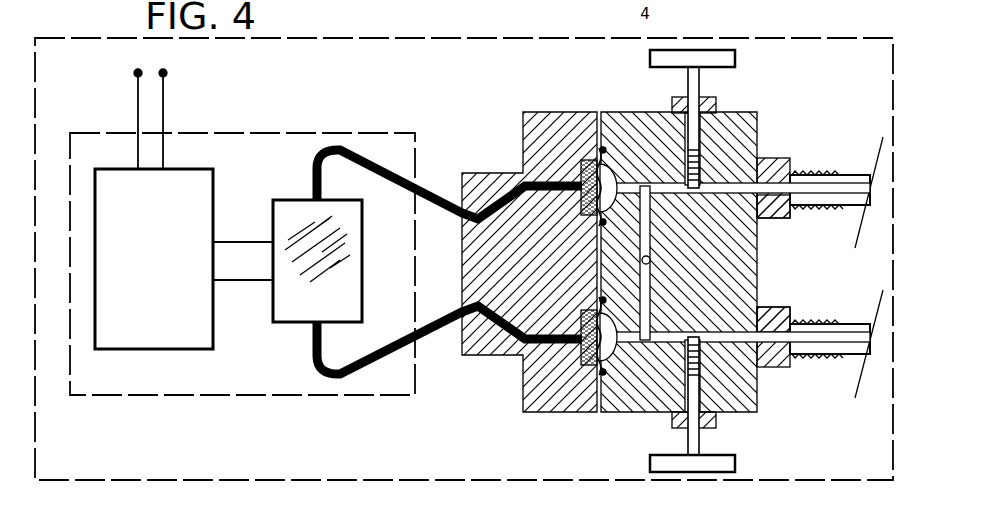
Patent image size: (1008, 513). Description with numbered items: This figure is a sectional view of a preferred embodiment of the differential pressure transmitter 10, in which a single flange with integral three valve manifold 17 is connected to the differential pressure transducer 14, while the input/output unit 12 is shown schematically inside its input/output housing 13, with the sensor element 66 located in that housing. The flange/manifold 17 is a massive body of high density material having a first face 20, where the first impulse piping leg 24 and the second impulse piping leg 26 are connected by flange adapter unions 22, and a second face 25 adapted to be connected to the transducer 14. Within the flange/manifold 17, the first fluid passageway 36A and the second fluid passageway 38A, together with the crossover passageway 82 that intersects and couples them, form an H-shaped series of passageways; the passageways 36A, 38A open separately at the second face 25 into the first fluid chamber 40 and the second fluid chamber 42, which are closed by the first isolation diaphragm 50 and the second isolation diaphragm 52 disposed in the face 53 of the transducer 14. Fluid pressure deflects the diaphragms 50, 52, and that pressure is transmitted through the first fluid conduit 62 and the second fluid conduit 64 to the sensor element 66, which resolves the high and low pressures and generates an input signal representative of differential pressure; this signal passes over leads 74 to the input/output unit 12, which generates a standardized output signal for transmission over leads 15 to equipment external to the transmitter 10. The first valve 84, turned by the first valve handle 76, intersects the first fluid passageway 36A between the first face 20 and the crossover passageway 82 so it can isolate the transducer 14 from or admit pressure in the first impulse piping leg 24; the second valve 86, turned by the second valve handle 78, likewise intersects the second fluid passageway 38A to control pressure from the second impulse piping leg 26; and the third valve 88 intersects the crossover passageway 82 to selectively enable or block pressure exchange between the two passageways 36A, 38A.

The differential pressure transmitter 10 is at (378, 44).
The input/output unit 12 is at (190, 213).
The input/output housing 13 is at (240, 133).
The differential pressure transducer 14 is at (572, 118).
The leads 15 is at (138, 70).
The single flange with integral three valve manifold 17 is at (623, 125).
The first face 20 is at (752, 125).
The flange adapter unions 22 is at (770, 307).
The first impulse piping leg 24 is at (810, 200).
The second face 25 is at (597, 268).
The second impulse piping leg 26 is at (830, 318).
The first fluid passageway 36A is at (768, 160).
The second fluid passageway 38A is at (760, 372).
The first fluid chamber 40 is at (618, 167).
The second fluid chamber 42 is at (590, 313).
The first isolation diaphragm 50 is at (622, 112).
The second isolation diaphragm 52 is at (597, 400).
The face 53 is at (597, 130).
The first fluid conduit 62 is at (520, 182).
The second fluid conduit 64 is at (510, 355).
The sensor element 66 is at (343, 297).
The leads 74 is at (220, 245).
The first valve handle 76 is at (650, 57).
The second valve handle 78 is at (700, 452).
The crossover passageway 82 is at (632, 345).
The first valve 84 is at (735, 180).
The second valve 86 is at (690, 345).
The third valve 88 is at (652, 260).